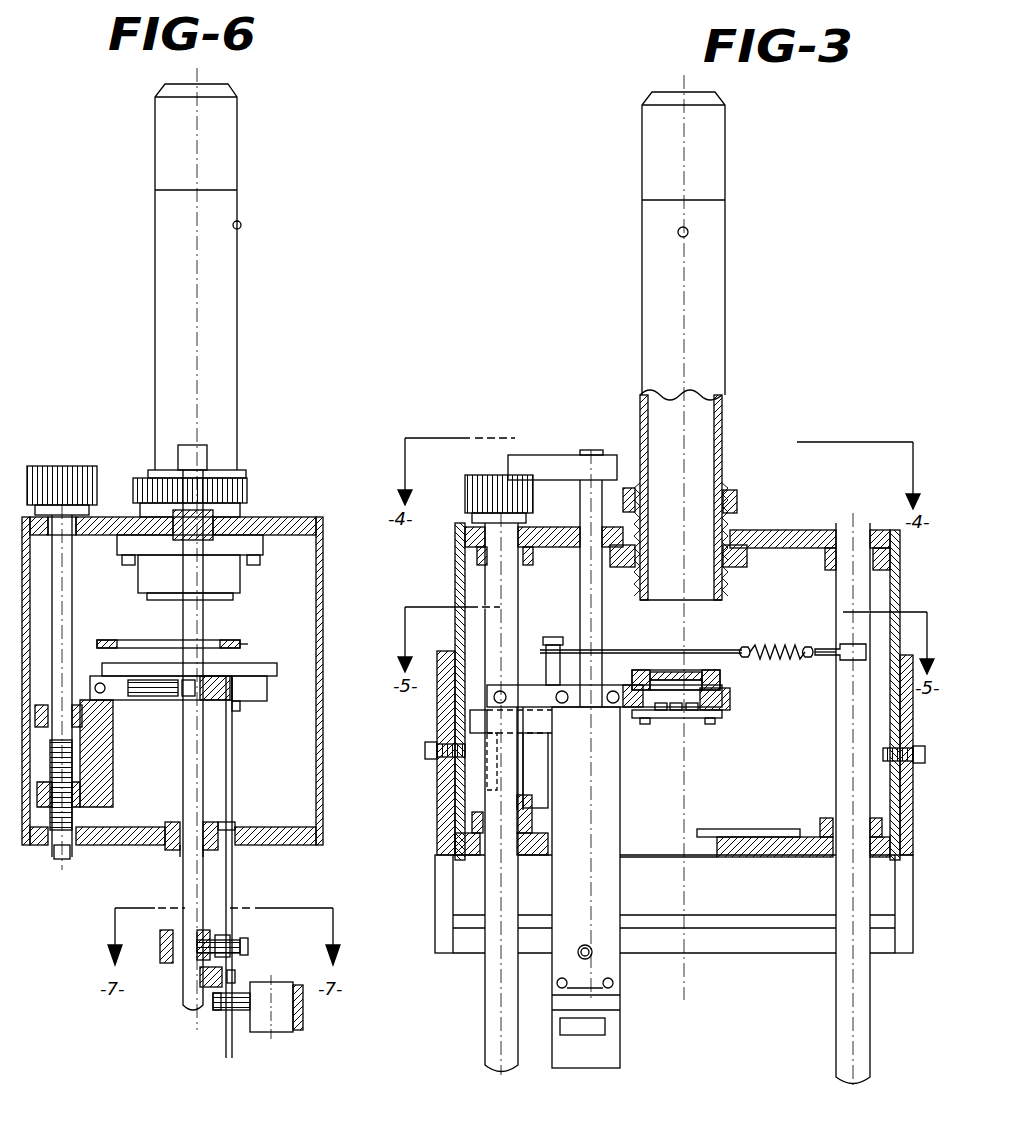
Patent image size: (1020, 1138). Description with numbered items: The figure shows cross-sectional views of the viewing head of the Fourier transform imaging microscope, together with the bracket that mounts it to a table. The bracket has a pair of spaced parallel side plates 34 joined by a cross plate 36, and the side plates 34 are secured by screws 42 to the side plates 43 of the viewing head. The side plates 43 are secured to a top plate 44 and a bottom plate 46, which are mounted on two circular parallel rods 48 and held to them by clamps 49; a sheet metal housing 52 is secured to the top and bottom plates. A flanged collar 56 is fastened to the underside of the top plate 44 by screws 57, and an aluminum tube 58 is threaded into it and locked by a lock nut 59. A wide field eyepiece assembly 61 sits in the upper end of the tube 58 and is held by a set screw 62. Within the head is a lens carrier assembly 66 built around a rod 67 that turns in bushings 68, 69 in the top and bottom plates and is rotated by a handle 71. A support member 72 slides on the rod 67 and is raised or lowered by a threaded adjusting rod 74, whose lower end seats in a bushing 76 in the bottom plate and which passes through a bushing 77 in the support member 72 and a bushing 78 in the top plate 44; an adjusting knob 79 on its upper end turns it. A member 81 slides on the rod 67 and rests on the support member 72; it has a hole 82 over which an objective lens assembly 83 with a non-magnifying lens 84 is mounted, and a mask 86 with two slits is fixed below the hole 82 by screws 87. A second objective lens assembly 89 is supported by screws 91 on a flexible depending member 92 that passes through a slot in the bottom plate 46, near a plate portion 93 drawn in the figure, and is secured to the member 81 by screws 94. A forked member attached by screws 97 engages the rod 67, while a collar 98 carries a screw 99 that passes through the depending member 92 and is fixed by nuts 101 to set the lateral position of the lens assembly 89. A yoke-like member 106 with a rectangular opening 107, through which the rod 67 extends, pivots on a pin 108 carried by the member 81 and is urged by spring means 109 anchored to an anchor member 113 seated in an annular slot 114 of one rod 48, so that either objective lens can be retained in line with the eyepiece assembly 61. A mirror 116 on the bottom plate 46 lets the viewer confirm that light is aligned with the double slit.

In FIG. 3, the side plates 34 is at (437, 908).
In FIG. 3, the cross plate 36 is at (745, 948).
In FIG. 3, the screws 42 is at (427, 750).
In FIG. 3, the side plates 43 is at (457, 587).
In FIG. 6, the top plate 44 is at (285, 518).
In FIG. 3, the top plate 44 is at (808, 518).
In FIG. 6, the bottom plate 46 is at (278, 848).
In FIG. 3, the bottom plate 46 is at (788, 858).
In FIG. 3, the rods 48 is at (482, 1037).
In FIG. 3, the clamps 49 is at (475, 552).
In FIG. 6, the sheet metal housing 52 is at (324, 594).
In FIG. 6, the flanged collar 56 is at (234, 590).
In FIG. 3, the flanged collar 56 is at (735, 588).
In FIG. 6, the screws 57 is at (252, 565).
In FIG. 6, the tube 58 is at (230, 290).
In FIG. 3, the tube 58 is at (722, 285).
In FIG. 6, the lock nut 59 is at (242, 486).
In FIG. 3, the lock nut 59 is at (738, 503).
In FIG. 6, the wide field eyepiece assembly 61 is at (230, 133).
In FIG. 3, the wide field eyepiece assembly 61 is at (648, 135).
In FIG. 6, the set screw 62 is at (241, 224).
In FIG. 3, the set screw 62 is at (678, 234).
In FIG. 6, the lens carrier assembly 66 is at (278, 667).
In FIG. 3, the lens carrier assembly 66 is at (668, 725).
In FIG. 6, the rod 67 is at (200, 618).
In FIG. 3, the rod 67 is at (602, 617).
In FIG. 6, the bushing 68 is at (242, 512).
In FIG. 6, the bushing 69 is at (175, 846).
In FIG. 6, the handle 71 is at (204, 455).
In FIG. 3, the handle 71 is at (540, 456).
In FIG. 6, the support member 72 is at (108, 797).
In FIG. 3, the support member 72 is at (473, 797).
In FIG. 6, the threaded adjusting rod 74 is at (67, 615).
In FIG. 6, the bushing 76 is at (60, 858).
In FIG. 6, the bushing 77 is at (113, 757).
In FIG. 6, the bushing 78 is at (80, 537).
In FIG. 6, the adjusting knob 79 is at (82, 466).
In FIG. 3, the adjusting knob 79 is at (462, 485).
In FIG. 3, the member 81 is at (490, 690).
In FIG. 3, the hole 82 is at (725, 690).
In FIG. 3, the objective lens assembly 83 is at (640, 652).
In FIG. 3, the non-magnifying lens 84 is at (690, 672).
In FIG. 3, the mask 86 is at (725, 716).
In FIG. 3, the screws 87 is at (708, 725).
In FIG. 6, the objective lens assembly 89 is at (300, 1012).
In FIG. 3, the objective lens assembly 89 is at (610, 1008).
In FIG. 6, the screws 91 is at (213, 1008).
In FIG. 3, the screws 91 is at (614, 985).
In FIG. 6, the depending member 92 is at (233, 810).
In FIG. 3, the depending member 92 is at (622, 800).
In FIG. 6, the plate 93 is at (244, 830).
In FIG. 3, the plate 93 is at (712, 857).
In FIG. 6, the screws 94 is at (243, 705).
In FIG. 6, the screws 97 is at (235, 974).
In FIG. 6, the collar 98 is at (160, 948).
In FIG. 6, the screw 99 is at (244, 945).
In FIG. 6, the nuts 101 is at (215, 935).
In FIG. 6, the yoke-like member 106 is at (243, 645).
In FIG. 3, the yoke-like member 106 is at (740, 648).
In FIG. 6, the rectangular opening 107 is at (142, 620).
In FIG. 3, the pin 108 is at (548, 637).
In FIG. 3, the spring means 109 is at (778, 648).
In FIG. 3, the anchor member 113 is at (818, 662).
In FIG. 3, the annular slot 114 is at (832, 648).
In FIG. 3, the mirror 116 is at (750, 830).